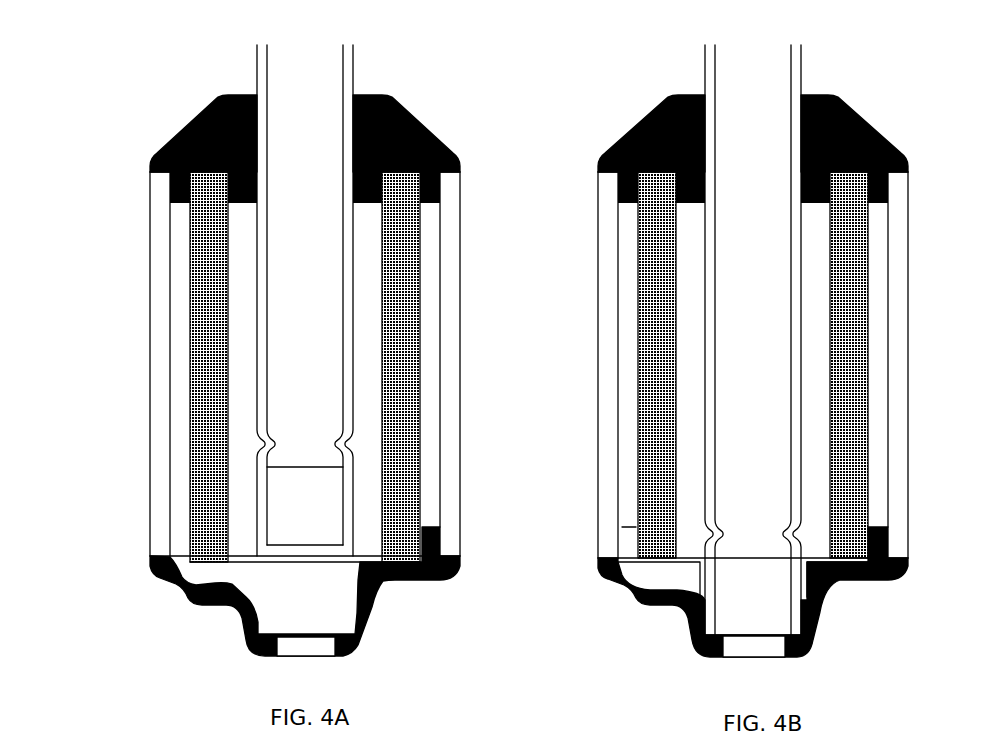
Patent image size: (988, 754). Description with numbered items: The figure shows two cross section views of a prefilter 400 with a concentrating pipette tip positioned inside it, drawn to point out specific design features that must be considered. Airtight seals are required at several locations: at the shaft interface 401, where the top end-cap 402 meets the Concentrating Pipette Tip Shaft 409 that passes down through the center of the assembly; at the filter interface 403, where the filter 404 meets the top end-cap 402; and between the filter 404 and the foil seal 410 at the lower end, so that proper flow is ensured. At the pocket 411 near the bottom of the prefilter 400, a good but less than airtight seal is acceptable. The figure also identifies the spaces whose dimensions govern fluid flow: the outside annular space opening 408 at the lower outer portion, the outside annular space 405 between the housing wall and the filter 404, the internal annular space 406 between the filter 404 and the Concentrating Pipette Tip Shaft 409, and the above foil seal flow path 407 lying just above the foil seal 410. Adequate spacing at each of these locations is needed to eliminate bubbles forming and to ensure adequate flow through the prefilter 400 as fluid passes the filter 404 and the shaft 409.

In FIG. 4A, the prefilter 400 is at (585, 132).
In FIG. 4B, the prefilter 400 is at (585, 132).
In FIG. 4A, the shaft interface 401 is at (255, 95).
In FIG. 4B, the shaft interface 401 is at (753, 340).
In FIG. 4A, the top end-cap 402 is at (188, 125).
In FIG. 4B, the top end-cap 402 is at (753, 133).
In FIG. 4A, the filter interface 403 is at (210, 174).
In FIG. 4B, the filter interface 403 is at (753, 187).
In FIG. 4A, the filter 404 is at (210, 210).
In FIG. 4B, the filter 404 is at (753, 365).
In FIG. 4A, the outside annular space 405 is at (180, 372).
In FIG. 4B, the outside annular space 405 is at (753, 365).
In FIG. 4A, the internal annular space 406 is at (240, 465).
In FIG. 4A, the above foil seal flow path 407 is at (257, 548).
In FIG. 4A, the outside annular space opening 408 is at (182, 567).
In FIG. 4A, the Concentrating Pipette Tip Shaft 409 is at (313, 410).
In FIG. 4B, the foil seal 410 is at (657, 561).
In FIG. 4B, the pocket 411 is at (817, 637).